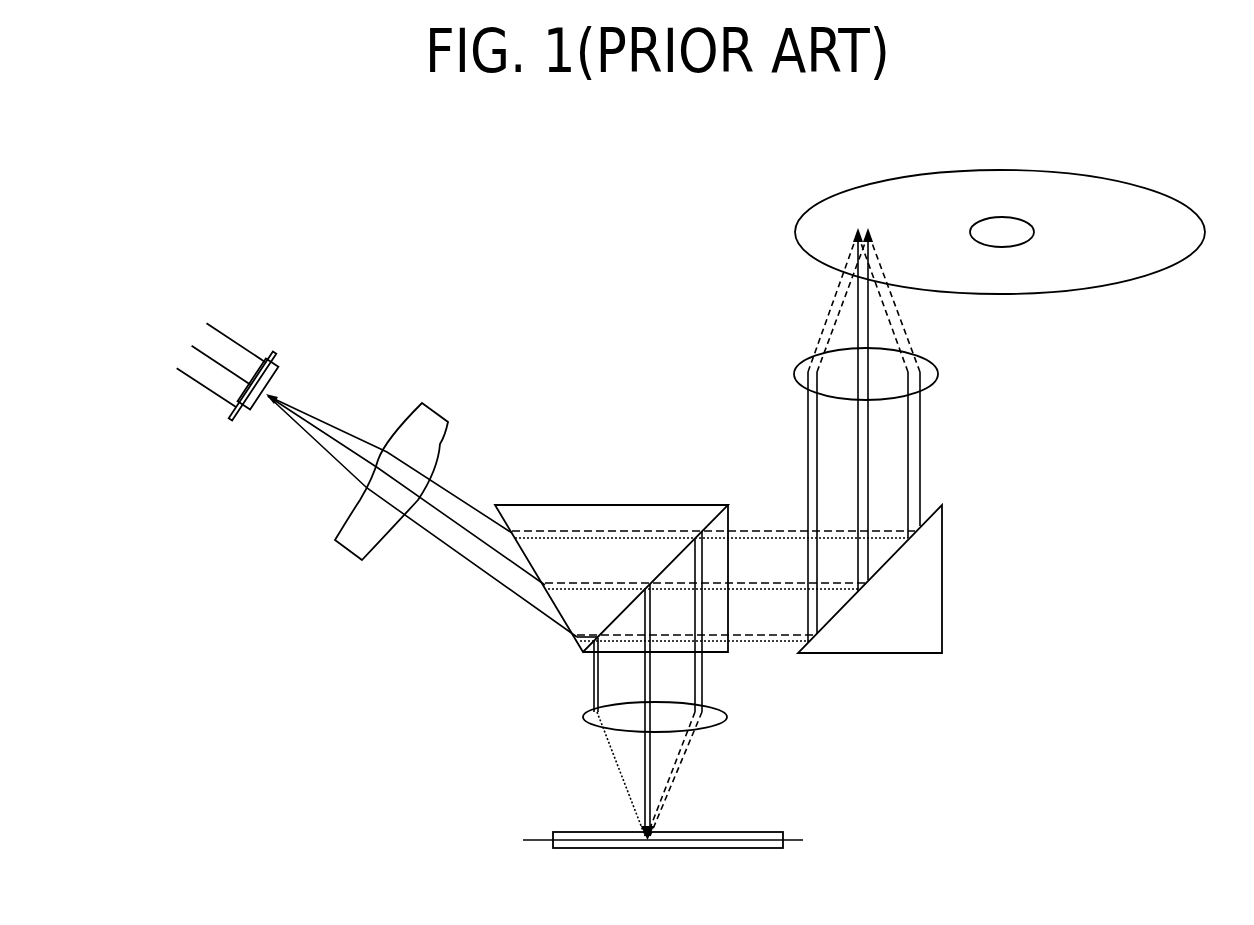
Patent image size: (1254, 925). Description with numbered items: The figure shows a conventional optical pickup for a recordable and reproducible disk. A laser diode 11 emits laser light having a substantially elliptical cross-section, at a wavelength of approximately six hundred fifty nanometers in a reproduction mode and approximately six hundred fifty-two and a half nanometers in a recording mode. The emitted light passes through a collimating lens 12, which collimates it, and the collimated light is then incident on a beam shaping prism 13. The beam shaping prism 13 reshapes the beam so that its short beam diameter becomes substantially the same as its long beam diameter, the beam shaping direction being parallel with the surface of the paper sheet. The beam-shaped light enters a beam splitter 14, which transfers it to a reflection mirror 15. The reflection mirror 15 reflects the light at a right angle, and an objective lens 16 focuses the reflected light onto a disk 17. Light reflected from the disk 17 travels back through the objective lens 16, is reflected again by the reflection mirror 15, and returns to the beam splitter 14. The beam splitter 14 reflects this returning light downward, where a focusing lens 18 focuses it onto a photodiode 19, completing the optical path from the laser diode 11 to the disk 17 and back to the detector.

The laser diode 11 is at (281, 373).
The collimating lens 12 is at (436, 412).
The beam shaping prism 13 is at (633, 505).
The beam splitter 14 is at (718, 653).
The reflection mirror 15 is at (942, 565).
The objective lens 16 is at (808, 360).
The disk 17 is at (1160, 194).
The focusing lens 18 is at (597, 713).
The photodiode 19 is at (783, 840).